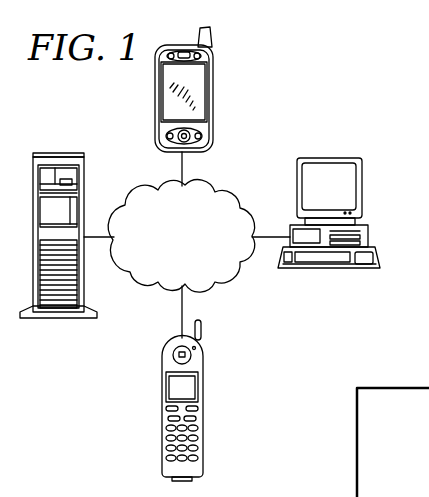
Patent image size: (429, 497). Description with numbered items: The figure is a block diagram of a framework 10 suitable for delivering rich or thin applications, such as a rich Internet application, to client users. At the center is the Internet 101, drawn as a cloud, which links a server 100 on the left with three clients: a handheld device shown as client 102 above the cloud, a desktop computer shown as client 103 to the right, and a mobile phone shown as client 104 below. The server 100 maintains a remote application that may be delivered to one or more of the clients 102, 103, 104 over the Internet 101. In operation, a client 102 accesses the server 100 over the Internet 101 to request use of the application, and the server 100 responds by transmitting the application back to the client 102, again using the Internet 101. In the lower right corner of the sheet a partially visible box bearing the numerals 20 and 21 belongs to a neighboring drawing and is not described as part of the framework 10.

The framework 10 is at (319, 86).
The server 100 is at (57, 318).
The Internet 101 is at (150, 282).
The client 102 is at (214, 90).
The client 103 is at (362, 190).
The client 104 is at (162, 436).
The component 20 is at (419, 448).
The component 21 is at (402, 488).